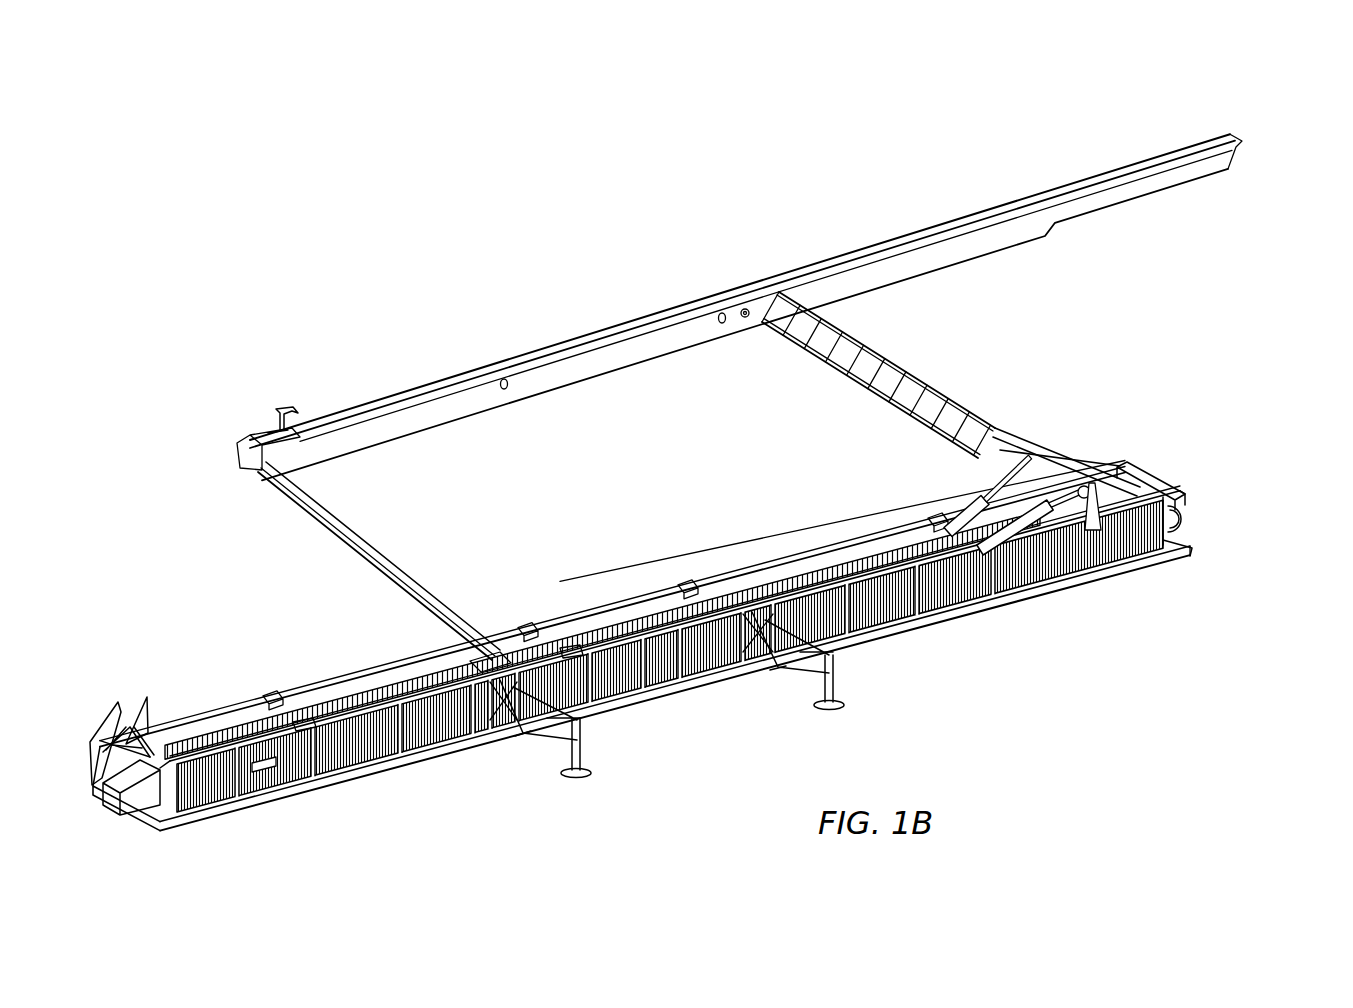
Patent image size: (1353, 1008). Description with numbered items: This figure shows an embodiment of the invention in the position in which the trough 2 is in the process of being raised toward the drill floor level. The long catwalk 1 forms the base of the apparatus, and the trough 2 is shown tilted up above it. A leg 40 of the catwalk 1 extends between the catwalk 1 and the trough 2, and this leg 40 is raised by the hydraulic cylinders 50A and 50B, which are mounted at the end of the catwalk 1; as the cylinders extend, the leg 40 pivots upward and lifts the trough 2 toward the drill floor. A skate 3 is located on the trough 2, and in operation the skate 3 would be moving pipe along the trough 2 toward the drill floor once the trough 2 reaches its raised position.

The catwalk 1 is at (898, 641).
The trough 2 is at (1232, 133).
The skate 3 is at (277, 410).
The leg 40 is at (935, 392).
The hydraulic cylinder 50A is at (977, 503).
The hydraulic cylinder 50B is at (1030, 540).